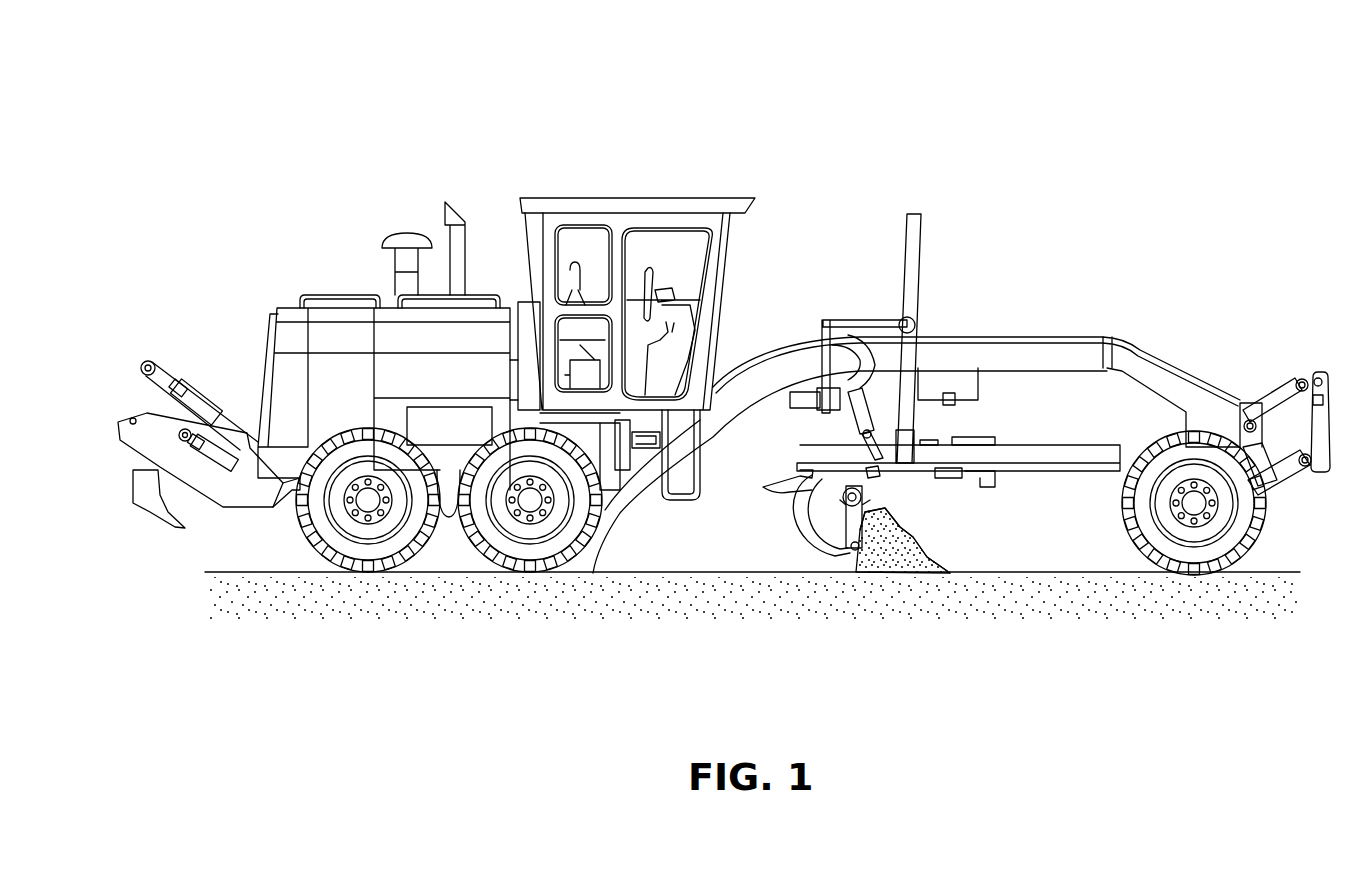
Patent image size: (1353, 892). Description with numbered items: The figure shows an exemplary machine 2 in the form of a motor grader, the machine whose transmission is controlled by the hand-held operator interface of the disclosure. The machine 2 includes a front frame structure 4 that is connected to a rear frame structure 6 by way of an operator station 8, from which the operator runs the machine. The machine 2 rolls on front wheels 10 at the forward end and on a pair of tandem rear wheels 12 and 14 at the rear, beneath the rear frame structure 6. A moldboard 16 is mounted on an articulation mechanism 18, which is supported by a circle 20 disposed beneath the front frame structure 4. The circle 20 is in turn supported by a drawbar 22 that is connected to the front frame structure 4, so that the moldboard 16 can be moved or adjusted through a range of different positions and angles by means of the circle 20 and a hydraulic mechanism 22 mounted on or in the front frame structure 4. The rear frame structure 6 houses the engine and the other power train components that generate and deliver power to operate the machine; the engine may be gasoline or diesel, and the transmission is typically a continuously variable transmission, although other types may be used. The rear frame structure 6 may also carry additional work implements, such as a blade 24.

The machine 2 is at (249, 200).
The front frame structure 4 is at (995, 331).
The rear frame structure 6 is at (349, 302).
The operator station 8 is at (645, 190).
The front wheels 10 is at (1243, 555).
The tandem rear wheel 12 is at (597, 540).
The tandem rear wheel 14 is at (432, 548).
The moldboard 16 is at (752, 618).
The articulation mechanism 18 is at (827, 532).
The circle 20 is at (887, 452).
The drawbar 22 is at (1148, 345).
The blade 24 is at (128, 443).